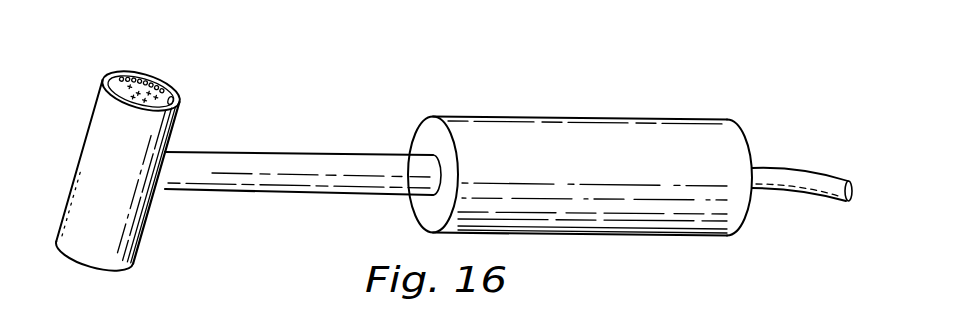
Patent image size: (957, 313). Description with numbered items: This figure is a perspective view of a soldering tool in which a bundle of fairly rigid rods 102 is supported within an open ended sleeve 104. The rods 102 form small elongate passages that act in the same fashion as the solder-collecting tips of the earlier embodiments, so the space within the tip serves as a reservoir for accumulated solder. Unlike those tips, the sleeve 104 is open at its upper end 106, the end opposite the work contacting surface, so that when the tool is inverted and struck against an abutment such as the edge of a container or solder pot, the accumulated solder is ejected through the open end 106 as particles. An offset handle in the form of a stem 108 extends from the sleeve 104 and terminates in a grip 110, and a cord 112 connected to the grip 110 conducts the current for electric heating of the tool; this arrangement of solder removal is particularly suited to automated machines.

The rods 102 is at (130, 71).
The sleeve 104 is at (98, 131).
The upper end 106 is at (175, 100).
The stem 108 is at (292, 158).
The grip 110 is at (552, 127).
The cord 112 is at (792, 176).